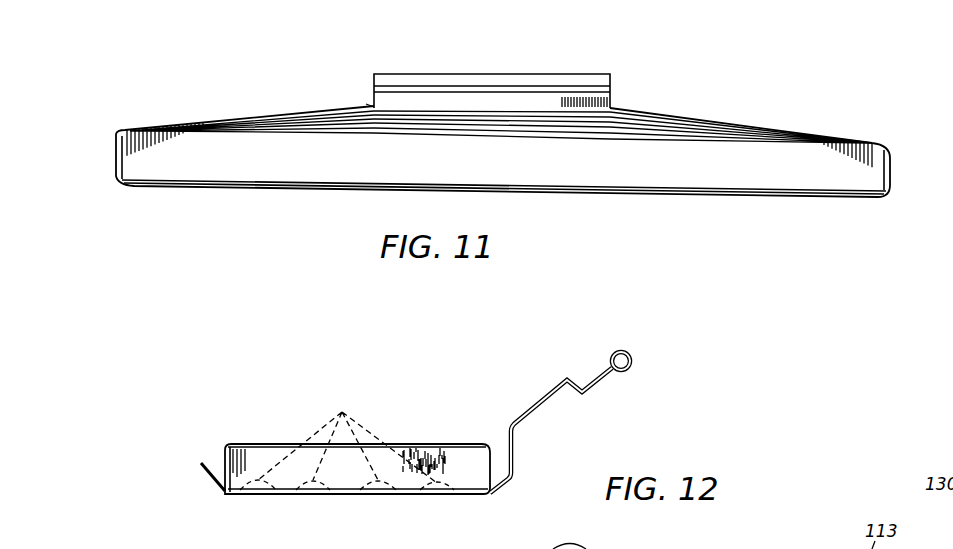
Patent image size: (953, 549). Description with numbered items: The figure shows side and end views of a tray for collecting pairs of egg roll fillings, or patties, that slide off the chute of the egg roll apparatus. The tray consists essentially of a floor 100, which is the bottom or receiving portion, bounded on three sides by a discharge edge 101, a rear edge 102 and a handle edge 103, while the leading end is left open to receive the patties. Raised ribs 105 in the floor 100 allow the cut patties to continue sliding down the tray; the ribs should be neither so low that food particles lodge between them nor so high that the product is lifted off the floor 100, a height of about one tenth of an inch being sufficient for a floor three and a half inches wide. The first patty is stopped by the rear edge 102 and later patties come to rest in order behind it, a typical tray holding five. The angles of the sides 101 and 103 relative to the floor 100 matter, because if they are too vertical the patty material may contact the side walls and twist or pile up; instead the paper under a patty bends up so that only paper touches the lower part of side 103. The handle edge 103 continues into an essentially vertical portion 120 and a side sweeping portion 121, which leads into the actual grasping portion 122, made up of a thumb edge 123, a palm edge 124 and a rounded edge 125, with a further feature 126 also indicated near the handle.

In FIG. 11, the floor 100 is at (540, 192).
In FIG. 12, the floor 100 is at (340, 493).
In FIG. 11, the discharge edge 101 is at (890, 190).
In FIG. 12, the discharge edge 101 is at (222, 490).
In FIG. 11, the rear edge 102 is at (108, 149).
In FIG. 12, the rear edge 102 is at (468, 457).
In FIG. 11, the handle edge 103 is at (728, 177).
In FIG. 12, the handle edge 103 is at (496, 490).
In FIG. 12, the raised ribs 105 is at (347, 440).
In FIG. 12, the vertical portion 120 is at (514, 455).
In FIG. 12, the side sweeping portion 121 is at (548, 393).
In FIG. 11, the grasping portion 122 is at (540, 73).
In FIG. 12, the grasping portion 122 is at (585, 398).
In FIG. 12, the thumb edge 123 is at (579, 384).
In FIG. 12, the palm edge 124 is at (600, 376).
In FIG. 12, the rounded edge 125 is at (632, 361).
In FIG. 12, the notch 126 is at (590, 389).